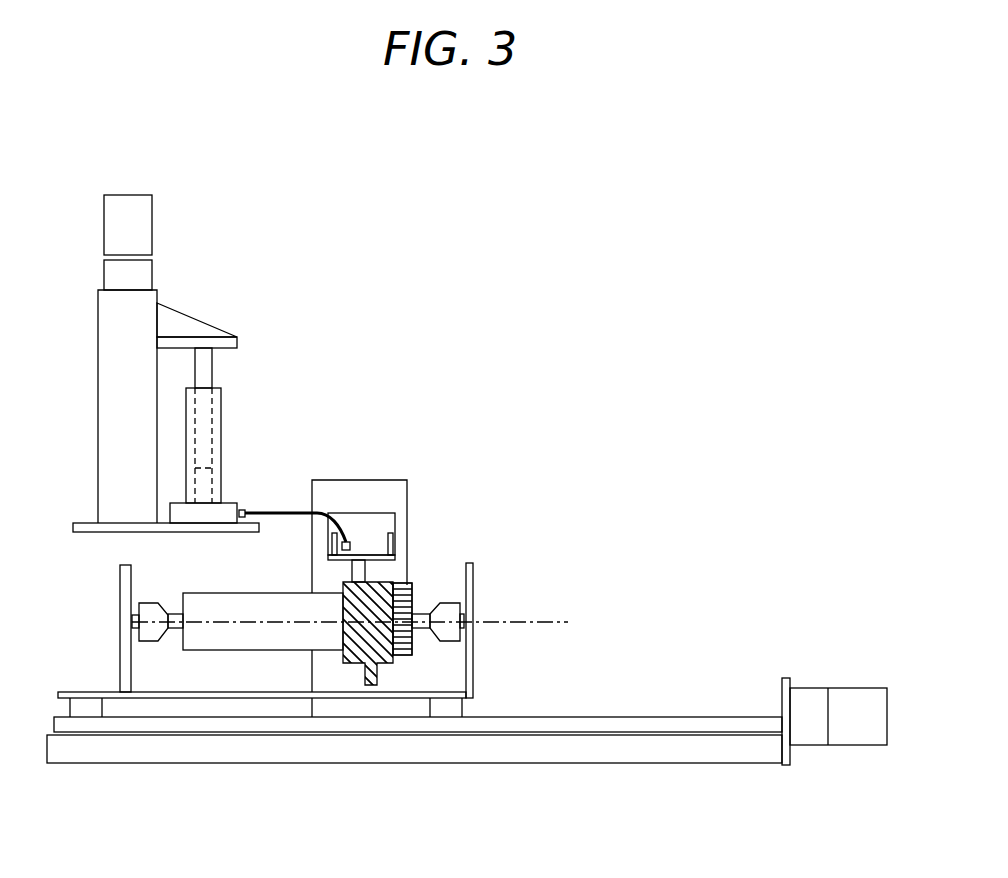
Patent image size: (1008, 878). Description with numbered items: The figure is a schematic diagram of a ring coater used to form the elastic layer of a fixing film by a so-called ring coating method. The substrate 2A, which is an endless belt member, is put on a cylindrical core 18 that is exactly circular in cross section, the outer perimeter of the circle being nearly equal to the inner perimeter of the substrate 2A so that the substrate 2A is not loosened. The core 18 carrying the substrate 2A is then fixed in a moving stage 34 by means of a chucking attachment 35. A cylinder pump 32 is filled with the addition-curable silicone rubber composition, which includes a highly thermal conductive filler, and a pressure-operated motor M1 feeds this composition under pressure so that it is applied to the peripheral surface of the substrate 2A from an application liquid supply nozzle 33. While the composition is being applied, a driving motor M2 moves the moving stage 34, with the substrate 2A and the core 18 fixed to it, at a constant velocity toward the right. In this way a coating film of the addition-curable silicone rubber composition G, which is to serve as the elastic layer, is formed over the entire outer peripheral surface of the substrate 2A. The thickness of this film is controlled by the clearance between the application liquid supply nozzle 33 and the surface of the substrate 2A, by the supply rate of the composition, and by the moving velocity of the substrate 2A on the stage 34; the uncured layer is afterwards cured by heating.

The pressure-operated motor M1 is at (104, 220).
The driving motor M2 is at (853, 697).
The cylinder pump 32 is at (207, 408).
The application liquid supply nozzle 33 is at (378, 665).
The core 18 is at (413, 592).
The addition-curable silicone rubber composition G is at (403, 583).
The moving stage 34 is at (470, 563).
The chucking attachment 35 is at (448, 603).
The substrate 2A is at (240, 650).